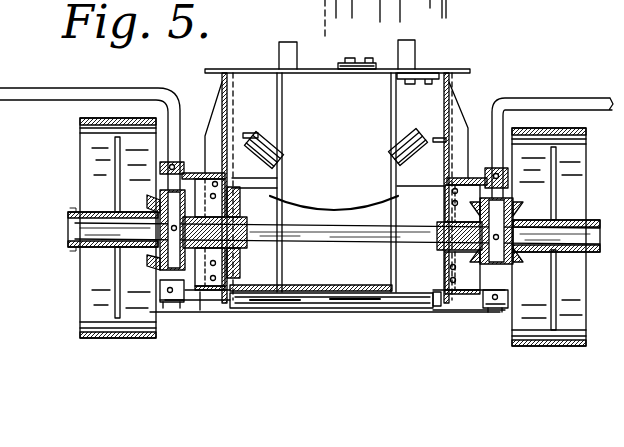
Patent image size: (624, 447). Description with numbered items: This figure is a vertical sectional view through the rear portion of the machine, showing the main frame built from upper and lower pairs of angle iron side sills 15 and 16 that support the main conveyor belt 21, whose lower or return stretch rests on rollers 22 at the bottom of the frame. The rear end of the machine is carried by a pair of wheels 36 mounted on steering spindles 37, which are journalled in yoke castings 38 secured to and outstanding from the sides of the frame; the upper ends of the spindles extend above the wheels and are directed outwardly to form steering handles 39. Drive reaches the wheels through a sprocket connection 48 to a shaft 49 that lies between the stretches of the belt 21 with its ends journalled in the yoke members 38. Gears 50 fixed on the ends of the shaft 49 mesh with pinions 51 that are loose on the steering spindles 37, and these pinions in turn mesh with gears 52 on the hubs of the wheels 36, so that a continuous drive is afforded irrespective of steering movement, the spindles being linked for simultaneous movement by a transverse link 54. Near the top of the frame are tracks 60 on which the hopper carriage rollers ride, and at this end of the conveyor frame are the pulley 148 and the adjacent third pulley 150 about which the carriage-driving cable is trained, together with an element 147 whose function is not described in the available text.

The upper angle iron side sills 15 is at (216, 77).
The lower angle iron side sills 16 is at (206, 300).
The main conveyor belt 21 is at (303, 202).
The rollers 22 is at (392, 308).
The wheels 36 is at (82, 301).
The steering spindles 37 is at (501, 196).
The yoke castings 38 is at (194, 172).
The steering handles 39 is at (70, 88).
The sprocket connection 48 is at (228, 234).
The shaft 49 is at (358, 247).
The gears 50 is at (447, 258).
The pinions 51 is at (153, 271).
The gears 52 is at (150, 200).
The transverse link 54 is at (343, 312).
The tracks 60 is at (252, 132).
The arm 147 is at (438, 12).
The pulley 148 is at (356, 72).
The pulley 150 is at (405, 80).